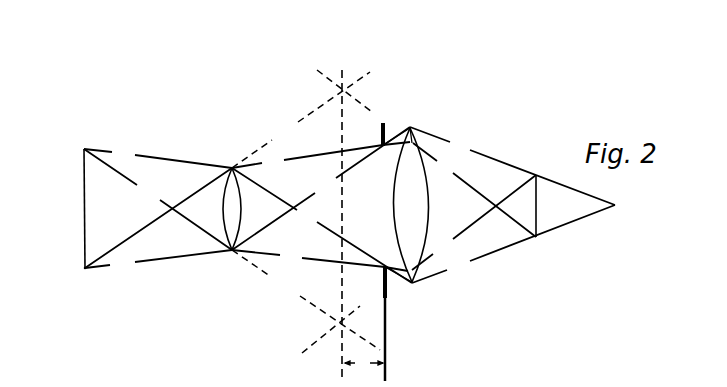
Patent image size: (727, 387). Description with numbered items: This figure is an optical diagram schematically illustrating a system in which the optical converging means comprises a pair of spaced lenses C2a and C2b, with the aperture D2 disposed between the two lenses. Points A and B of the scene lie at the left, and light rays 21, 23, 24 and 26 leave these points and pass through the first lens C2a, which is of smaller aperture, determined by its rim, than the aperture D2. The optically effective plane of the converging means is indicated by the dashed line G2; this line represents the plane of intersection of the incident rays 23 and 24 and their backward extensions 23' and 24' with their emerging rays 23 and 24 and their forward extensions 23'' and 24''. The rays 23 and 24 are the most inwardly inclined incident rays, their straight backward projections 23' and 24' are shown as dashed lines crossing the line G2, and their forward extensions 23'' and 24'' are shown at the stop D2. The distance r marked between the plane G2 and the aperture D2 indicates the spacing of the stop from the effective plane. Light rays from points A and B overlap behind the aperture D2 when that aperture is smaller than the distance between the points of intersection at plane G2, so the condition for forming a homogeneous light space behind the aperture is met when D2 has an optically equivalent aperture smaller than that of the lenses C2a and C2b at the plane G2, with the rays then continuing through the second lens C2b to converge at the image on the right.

The light ray 21 is at (349, 211).
The most inwardly inclined incident ray 23 is at (310, 210).
The most inwardly inclined incident ray 24 is at (310, 205).
The light ray 26 is at (350, 201).
The backward extension of ray 24 24' is at (302, 119).
The backward extension of ray 23 23' is at (306, 301).
The forward extension of ray 24 24'' is at (383, 127).
The forward extension of ray 23 23'' is at (372, 324).
The first lens C2a is at (232, 166).
The second lens C2b is at (412, 130).
The aperture D2 is at (393, 237).
The optically effective plane G2 is at (346, 217).
The scene point A is at (73, 202).
The scene point B is at (74, 276).
The distance between plane G2 and stop D2 r is at (364, 364).